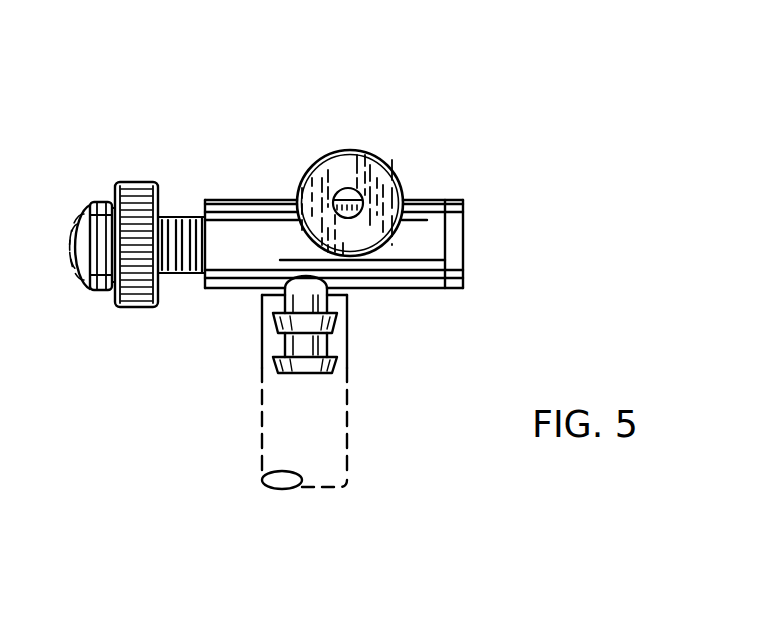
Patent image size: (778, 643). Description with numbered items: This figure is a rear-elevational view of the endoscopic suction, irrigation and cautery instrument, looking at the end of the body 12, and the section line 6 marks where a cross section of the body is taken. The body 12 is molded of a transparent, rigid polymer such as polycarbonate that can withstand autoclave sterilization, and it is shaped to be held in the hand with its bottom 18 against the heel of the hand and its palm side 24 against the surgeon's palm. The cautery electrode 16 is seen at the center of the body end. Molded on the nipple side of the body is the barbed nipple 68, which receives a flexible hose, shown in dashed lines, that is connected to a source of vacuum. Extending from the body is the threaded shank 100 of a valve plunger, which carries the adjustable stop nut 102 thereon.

The section line 6- 6 is at (355, 110).
The body 12 is at (233, 194).
The cautery electrode 16 is at (337, 192).
The bottom 18 is at (465, 247).
The palm side 24 is at (418, 200).
The nipple 68 is at (273, 374).
The shank 100 is at (181, 268).
The adjustable stop nut 102 is at (143, 308).